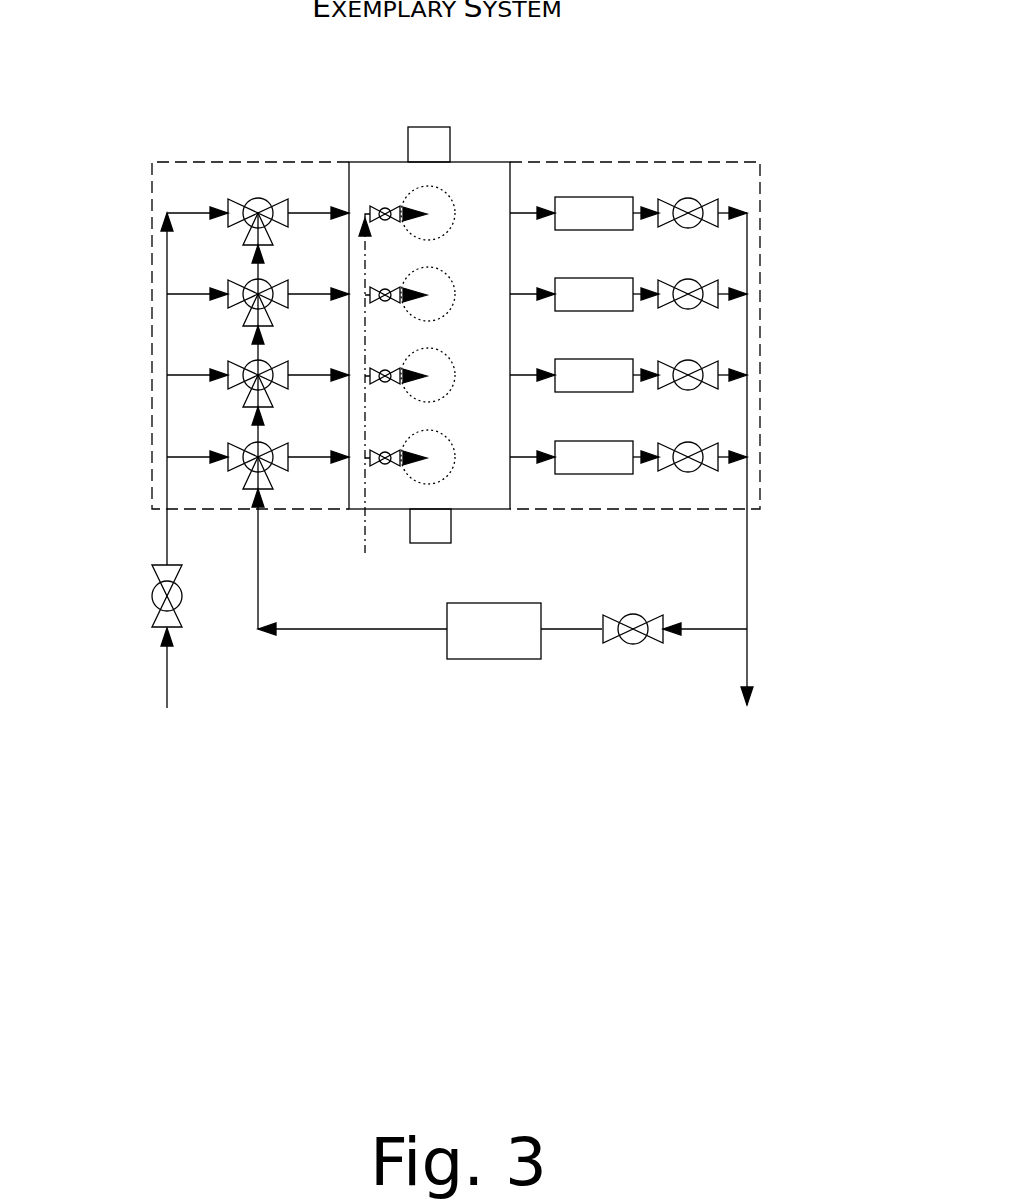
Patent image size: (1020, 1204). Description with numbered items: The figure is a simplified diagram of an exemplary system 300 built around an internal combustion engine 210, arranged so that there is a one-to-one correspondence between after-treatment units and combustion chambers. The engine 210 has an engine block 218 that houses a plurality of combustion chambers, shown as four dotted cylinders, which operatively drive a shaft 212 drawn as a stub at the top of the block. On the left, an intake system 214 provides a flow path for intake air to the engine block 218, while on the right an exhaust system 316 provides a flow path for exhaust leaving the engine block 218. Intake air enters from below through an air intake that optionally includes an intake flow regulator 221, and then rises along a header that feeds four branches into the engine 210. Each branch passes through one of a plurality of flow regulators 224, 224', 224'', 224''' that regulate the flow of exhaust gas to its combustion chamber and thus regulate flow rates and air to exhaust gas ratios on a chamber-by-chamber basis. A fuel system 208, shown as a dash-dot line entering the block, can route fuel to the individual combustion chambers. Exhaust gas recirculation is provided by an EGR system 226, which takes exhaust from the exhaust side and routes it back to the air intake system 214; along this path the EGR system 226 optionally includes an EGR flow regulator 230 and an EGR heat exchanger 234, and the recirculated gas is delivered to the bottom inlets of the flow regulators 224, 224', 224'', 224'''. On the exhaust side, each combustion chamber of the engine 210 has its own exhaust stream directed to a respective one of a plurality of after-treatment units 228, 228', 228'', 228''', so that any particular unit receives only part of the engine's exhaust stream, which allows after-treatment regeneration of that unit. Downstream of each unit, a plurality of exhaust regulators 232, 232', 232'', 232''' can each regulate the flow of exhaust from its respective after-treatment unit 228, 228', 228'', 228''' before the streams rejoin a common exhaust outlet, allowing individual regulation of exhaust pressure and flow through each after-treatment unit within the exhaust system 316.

The exemplary system 300 is at (612, 80).
The internal combustion engine 210 is at (387, 162).
The shaft 212 is at (434, 127).
The intake system 214 is at (210, 162).
The exhaust system 316 is at (632, 162).
The engine block 218 is at (496, 269).
The flow regulator 224 is at (234, 209).
The flow regulator 224' is at (234, 289).
The flow regulator 224'' is at (234, 370).
The flow regulator 224''' is at (234, 452).
The after-treatment unit 228 is at (594, 213).
The after-treatment unit 228' is at (594, 294).
The after-treatment unit 228'' is at (594, 375).
The after-treatment unit 228''' is at (594, 457).
The exhaust regulator 232 is at (665, 200).
The exhaust regulator 232' is at (662, 281).
The exhaust regulator 232'' is at (661, 362).
The exhaust regulator 232''' is at (659, 443).
The intake flow regulator 221 is at (152, 590).
The fuel system 208 is at (386, 619).
The exhaust gas recirculation (EGR) system 226 is at (394, 709).
The EGR heat exchanger 234 is at (515, 652).
The EGR flow regulator 230 is at (621, 615).